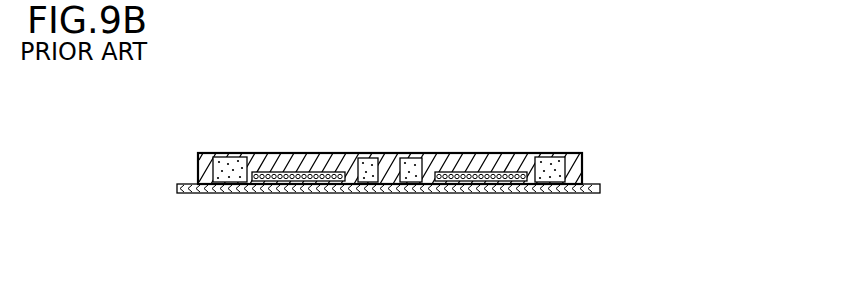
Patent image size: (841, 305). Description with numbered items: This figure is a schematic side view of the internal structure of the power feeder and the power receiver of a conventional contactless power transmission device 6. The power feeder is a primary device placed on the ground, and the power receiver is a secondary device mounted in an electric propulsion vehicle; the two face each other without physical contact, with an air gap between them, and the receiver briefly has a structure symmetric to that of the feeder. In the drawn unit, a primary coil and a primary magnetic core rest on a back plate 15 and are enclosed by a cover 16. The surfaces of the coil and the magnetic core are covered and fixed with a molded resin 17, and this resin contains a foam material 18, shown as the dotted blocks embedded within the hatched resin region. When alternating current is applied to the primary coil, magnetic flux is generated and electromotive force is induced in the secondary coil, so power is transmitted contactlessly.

The contactless power transmission device 6 is at (449, 146).
The back plate 15 is at (555, 190).
The cover 16 is at (270, 158).
The molded resin 17 is at (500, 160).
The foam material 18 is at (230, 172).